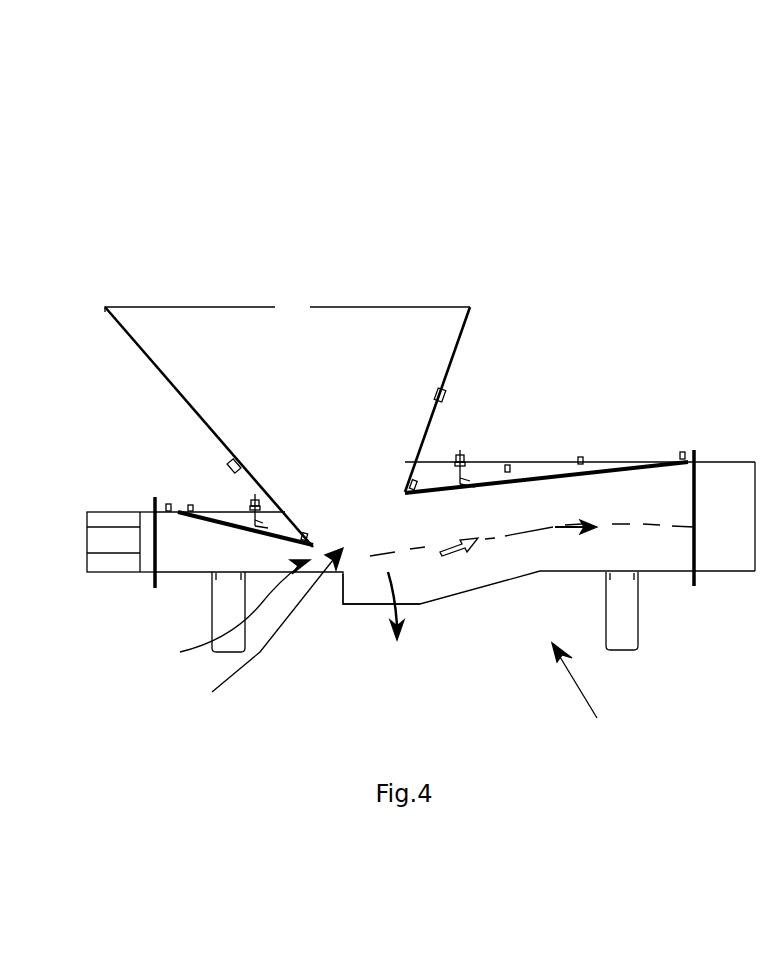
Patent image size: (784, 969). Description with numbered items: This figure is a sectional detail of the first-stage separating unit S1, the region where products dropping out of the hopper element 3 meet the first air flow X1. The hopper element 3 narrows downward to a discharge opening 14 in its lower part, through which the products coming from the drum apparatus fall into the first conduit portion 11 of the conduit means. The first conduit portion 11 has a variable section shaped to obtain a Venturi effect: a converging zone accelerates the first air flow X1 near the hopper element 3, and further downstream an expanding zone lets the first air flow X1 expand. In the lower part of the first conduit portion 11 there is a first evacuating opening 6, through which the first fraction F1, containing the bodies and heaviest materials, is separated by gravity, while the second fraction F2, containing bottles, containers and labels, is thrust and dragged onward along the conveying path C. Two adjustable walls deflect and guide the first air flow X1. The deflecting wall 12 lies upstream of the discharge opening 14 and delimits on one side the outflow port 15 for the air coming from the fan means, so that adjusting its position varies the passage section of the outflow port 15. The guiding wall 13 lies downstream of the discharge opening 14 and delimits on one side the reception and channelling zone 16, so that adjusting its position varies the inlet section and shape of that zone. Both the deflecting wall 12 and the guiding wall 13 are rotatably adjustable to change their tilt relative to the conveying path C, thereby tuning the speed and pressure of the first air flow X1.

The hopper element 3 is at (447, 320).
The first evacuating opening 6 is at (357, 605).
The first conduit portion 11 is at (335, 697).
The deflecting wall 12 is at (223, 512).
The guiding wall 13 is at (523, 477).
The discharge opening 14 is at (263, 639).
The outflow port 15 is at (229, 615).
The reception and channelling zone 16 is at (510, 513).
The conveying path C is at (650, 527).
The first fraction F1 is at (403, 613).
The second fraction F2 is at (553, 523).
The first air flow X1 is at (473, 548).
The first-stage separating unit S1 is at (591, 694).